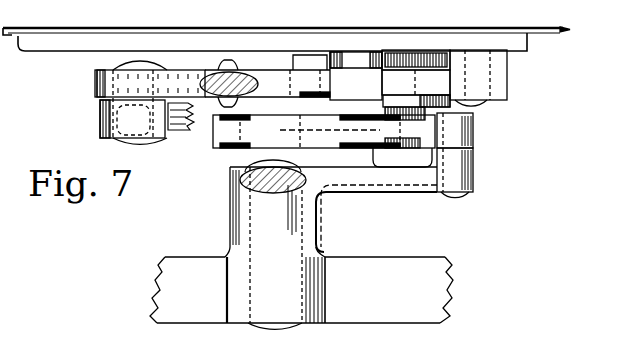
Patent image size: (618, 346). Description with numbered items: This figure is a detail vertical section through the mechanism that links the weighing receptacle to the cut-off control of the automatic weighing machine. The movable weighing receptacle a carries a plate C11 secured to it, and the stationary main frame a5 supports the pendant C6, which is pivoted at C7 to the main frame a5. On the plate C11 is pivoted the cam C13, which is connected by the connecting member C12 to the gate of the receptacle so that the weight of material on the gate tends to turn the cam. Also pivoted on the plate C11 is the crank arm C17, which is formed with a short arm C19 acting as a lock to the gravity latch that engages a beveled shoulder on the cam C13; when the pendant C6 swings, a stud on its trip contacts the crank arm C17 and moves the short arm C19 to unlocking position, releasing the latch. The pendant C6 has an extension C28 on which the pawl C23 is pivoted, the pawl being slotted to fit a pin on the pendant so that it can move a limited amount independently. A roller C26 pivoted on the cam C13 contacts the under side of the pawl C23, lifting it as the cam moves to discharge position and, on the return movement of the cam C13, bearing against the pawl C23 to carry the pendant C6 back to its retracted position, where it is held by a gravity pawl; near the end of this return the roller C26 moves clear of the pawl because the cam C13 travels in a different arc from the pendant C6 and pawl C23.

The movable weighing receptacle a is at (571, 27).
The main frame a5 is at (301, 290).
The pendant C6 is at (320, 228).
The pivot of pendant C7 is at (248, 323).
The plate C11 is at (418, 70).
The connecting member C12 is at (100, 108).
The cam C13 is at (97, 76).
The crank arm C17 is at (265, 81).
The short arm C19 is at (452, 103).
The pawl C23 is at (473, 130).
The roller C26 is at (395, 147).
The extension of pendant C28 is at (473, 167).